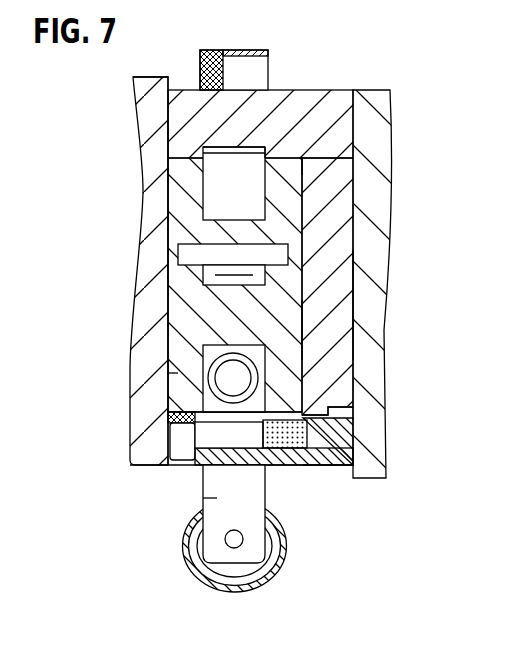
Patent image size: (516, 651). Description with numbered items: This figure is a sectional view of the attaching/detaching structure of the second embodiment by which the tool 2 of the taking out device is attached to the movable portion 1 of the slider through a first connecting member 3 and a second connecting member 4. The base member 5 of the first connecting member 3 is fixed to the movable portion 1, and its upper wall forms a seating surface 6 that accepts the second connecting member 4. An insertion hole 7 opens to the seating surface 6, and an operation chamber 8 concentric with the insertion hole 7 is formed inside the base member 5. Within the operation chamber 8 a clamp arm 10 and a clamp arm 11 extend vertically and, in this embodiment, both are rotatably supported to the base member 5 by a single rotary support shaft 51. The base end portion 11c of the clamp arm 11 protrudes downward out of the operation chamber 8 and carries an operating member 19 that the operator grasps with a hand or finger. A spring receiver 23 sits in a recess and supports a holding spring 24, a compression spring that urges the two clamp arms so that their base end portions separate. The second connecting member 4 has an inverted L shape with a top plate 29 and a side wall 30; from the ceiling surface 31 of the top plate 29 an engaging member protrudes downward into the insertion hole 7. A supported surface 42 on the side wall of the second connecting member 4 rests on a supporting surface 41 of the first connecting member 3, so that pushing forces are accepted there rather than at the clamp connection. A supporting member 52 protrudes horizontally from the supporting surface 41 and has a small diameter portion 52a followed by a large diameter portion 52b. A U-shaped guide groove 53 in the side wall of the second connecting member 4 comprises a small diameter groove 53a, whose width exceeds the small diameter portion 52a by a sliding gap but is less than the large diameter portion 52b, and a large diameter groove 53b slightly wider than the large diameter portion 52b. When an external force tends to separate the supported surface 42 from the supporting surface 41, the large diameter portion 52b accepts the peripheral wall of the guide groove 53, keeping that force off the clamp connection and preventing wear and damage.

The movable portion 1 is at (147, 120).
The tool 2 is at (375, 142).
The first connecting member 3 is at (165, 318).
The second connecting member 4 is at (355, 108).
The base member 5 is at (221, 326).
The seating surface 6 is at (266, 155).
The insertion hole 7 is at (235, 147).
The operation chamber 8 is at (200, 248).
The clamp arm 10 is at (240, 192).
The clamp arm 11 is at (217, 498).
The base end portion 11c is at (256, 542).
The operating member 19 is at (183, 546).
The spring receiver 23 is at (168, 375).
The holding spring 24 is at (168, 414).
The top plate 29 is at (318, 90).
The side wall 30 is at (340, 200).
The ceiling surface 31 is at (309, 170).
The supporting surface 41 is at (353, 303).
The supported surface 42 is at (268, 333).
The rotary support shaft 51 is at (237, 275).
The supporting member 52 is at (365, 438).
The small diameter portion 52a is at (317, 468).
The large diameter portion 52b is at (341, 468).
The guide groove 53 is at (355, 463).
The small diameter groove 53a is at (327, 388).
The large diameter groove 53b is at (358, 414).